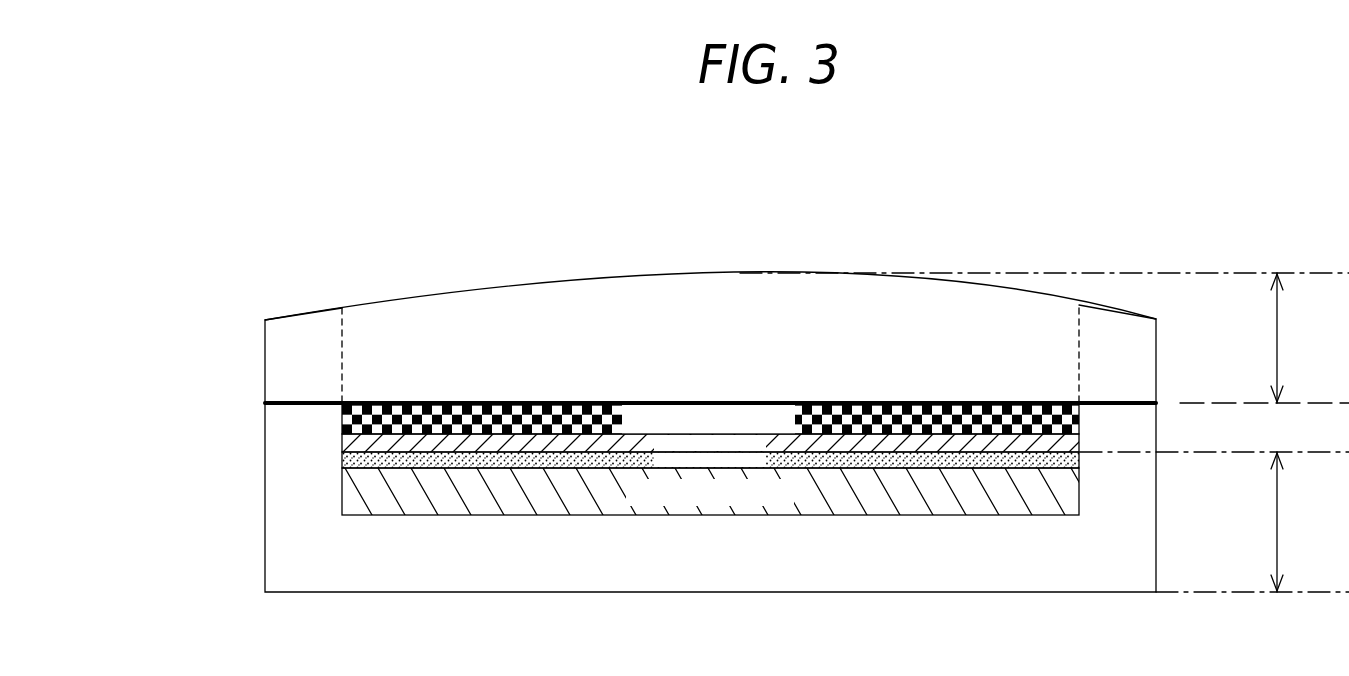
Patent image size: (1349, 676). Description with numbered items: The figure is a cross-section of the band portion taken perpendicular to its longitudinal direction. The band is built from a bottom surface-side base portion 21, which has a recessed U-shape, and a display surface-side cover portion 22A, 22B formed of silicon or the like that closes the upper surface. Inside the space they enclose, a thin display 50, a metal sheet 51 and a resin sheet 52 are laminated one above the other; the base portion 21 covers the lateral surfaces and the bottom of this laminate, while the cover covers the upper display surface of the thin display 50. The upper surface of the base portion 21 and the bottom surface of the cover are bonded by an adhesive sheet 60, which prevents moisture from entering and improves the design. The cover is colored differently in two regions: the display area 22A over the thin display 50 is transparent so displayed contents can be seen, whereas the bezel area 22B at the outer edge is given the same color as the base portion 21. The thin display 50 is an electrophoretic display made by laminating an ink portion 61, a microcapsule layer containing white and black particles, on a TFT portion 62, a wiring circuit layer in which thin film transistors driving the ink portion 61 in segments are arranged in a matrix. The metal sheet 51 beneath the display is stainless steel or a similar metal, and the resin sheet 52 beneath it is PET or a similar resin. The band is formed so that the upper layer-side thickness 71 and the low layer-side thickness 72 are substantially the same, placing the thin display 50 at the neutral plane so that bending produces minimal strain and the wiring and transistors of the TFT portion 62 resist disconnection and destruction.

The base portion 21 is at (348, 572).
The display area 22A is at (513, 310).
The bezel area 22B is at (302, 340).
The thin display 50 is at (203, 403).
The metal sheet 51 is at (353, 461).
The resin sheet 52 is at (355, 494).
The adhesive sheet 60 is at (288, 402).
The ink portion 61 is at (345, 420).
The TFT portion 62 is at (345, 443).
The upper layer-side thickness 71 is at (1281, 343).
The low layer-side thickness 72 is at (1281, 523).